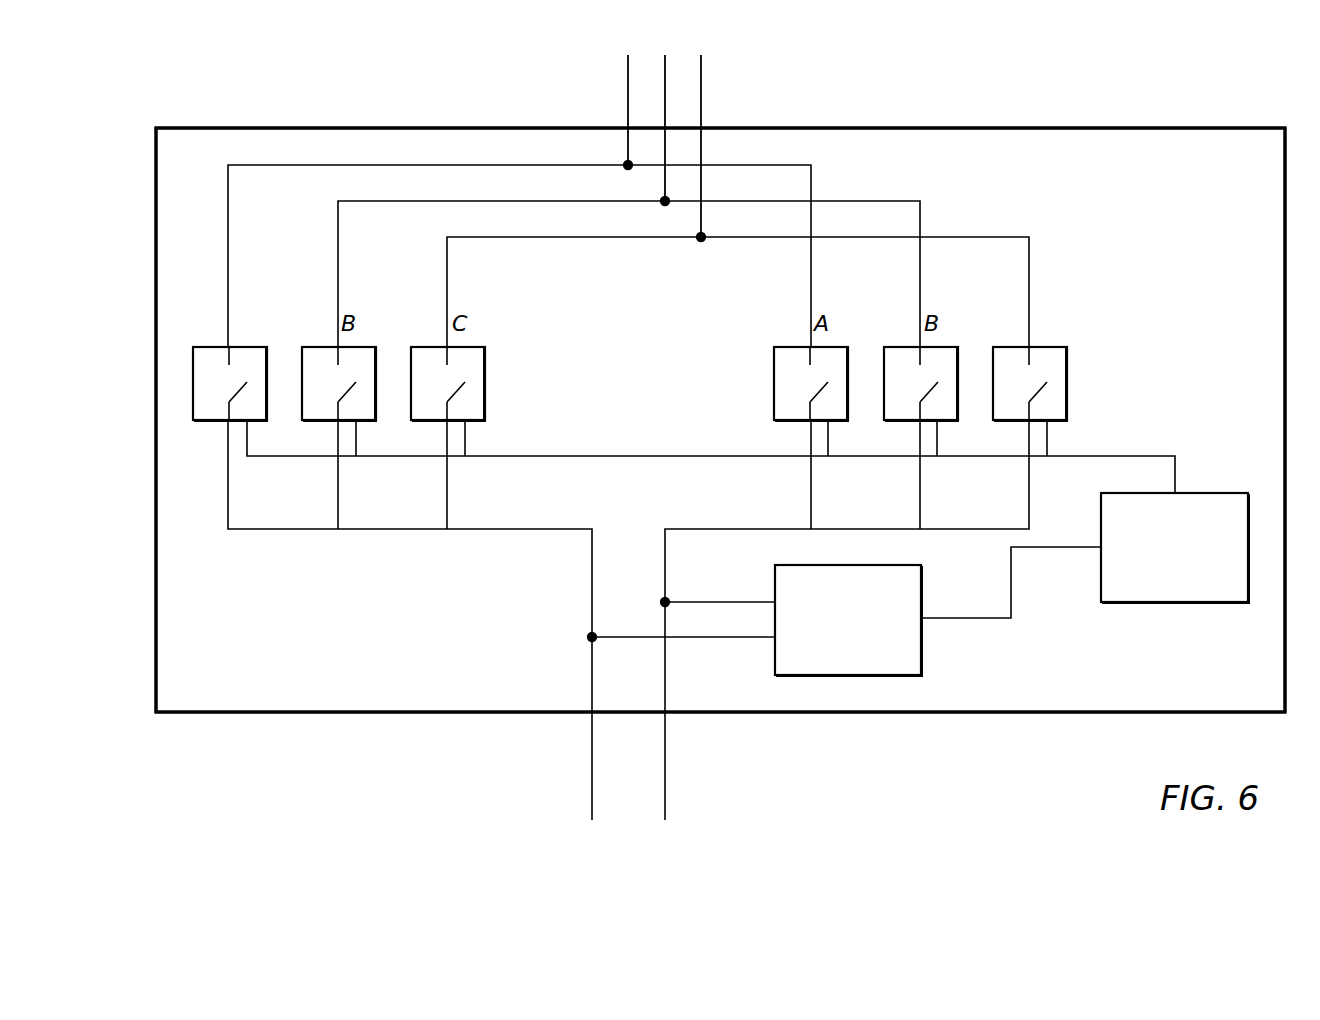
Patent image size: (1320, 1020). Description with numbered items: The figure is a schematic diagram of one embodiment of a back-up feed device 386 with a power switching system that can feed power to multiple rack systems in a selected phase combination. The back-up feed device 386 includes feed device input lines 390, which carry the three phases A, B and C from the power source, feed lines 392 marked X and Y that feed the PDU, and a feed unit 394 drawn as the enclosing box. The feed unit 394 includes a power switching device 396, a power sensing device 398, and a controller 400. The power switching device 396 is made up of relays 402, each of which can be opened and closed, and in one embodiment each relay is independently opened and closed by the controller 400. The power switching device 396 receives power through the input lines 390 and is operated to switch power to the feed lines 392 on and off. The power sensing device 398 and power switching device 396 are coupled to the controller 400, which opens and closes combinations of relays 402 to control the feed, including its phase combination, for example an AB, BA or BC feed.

The back-up feed device 386 is at (1155, 98).
The feed device input lines 390 is at (596, 86).
The feed lines 392 is at (566, 773).
The feed unit 394 is at (720, 420).
The power switching device 396 is at (1090, 360).
The power sensing device 398 is at (756, 620).
The controller 400 is at (1175, 548).
The relays 402 is at (212, 347).